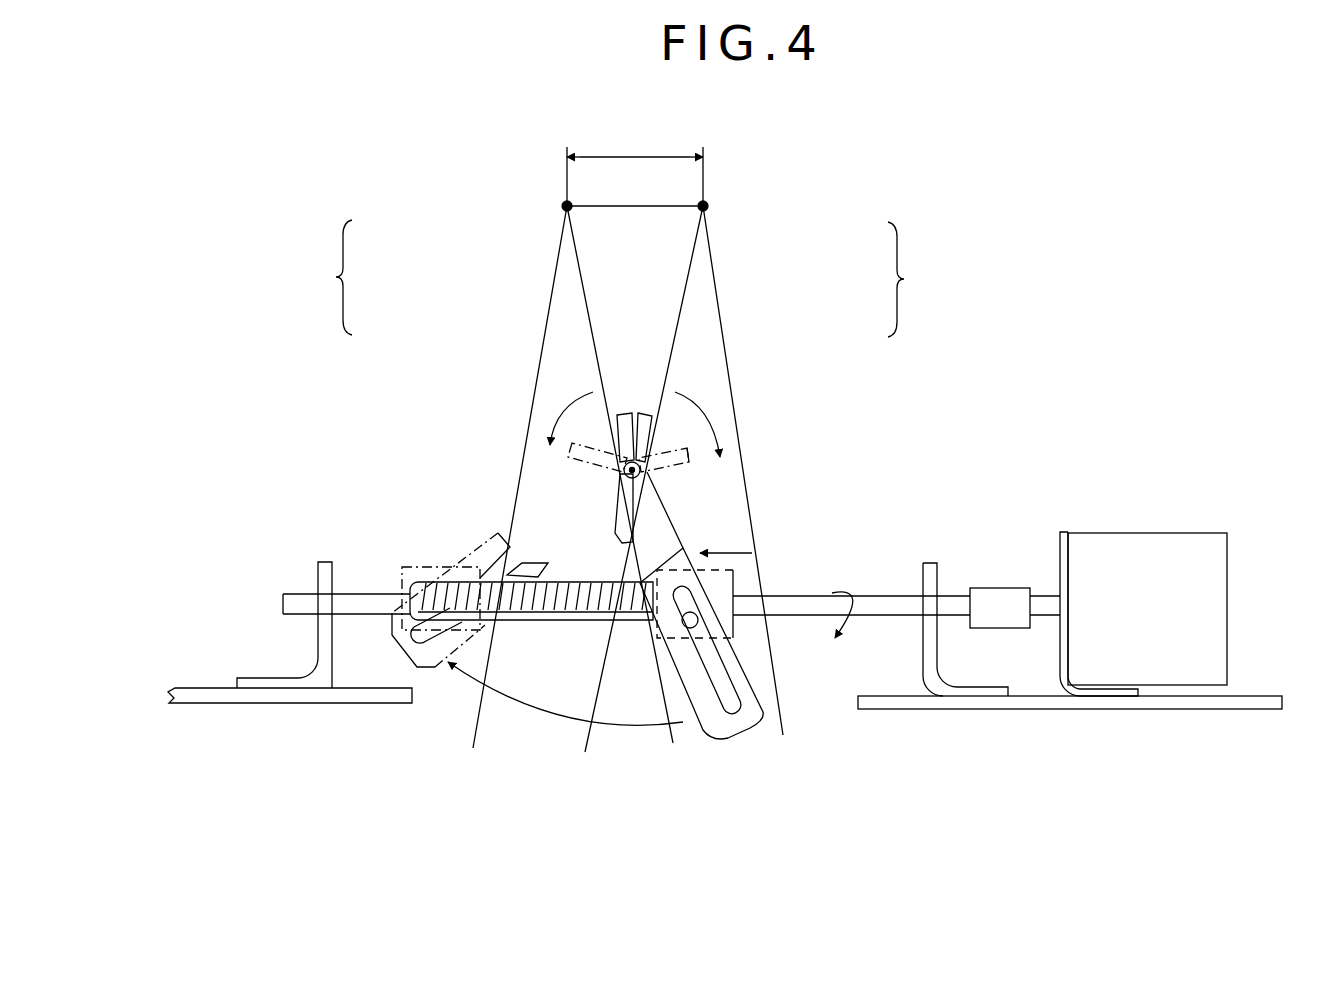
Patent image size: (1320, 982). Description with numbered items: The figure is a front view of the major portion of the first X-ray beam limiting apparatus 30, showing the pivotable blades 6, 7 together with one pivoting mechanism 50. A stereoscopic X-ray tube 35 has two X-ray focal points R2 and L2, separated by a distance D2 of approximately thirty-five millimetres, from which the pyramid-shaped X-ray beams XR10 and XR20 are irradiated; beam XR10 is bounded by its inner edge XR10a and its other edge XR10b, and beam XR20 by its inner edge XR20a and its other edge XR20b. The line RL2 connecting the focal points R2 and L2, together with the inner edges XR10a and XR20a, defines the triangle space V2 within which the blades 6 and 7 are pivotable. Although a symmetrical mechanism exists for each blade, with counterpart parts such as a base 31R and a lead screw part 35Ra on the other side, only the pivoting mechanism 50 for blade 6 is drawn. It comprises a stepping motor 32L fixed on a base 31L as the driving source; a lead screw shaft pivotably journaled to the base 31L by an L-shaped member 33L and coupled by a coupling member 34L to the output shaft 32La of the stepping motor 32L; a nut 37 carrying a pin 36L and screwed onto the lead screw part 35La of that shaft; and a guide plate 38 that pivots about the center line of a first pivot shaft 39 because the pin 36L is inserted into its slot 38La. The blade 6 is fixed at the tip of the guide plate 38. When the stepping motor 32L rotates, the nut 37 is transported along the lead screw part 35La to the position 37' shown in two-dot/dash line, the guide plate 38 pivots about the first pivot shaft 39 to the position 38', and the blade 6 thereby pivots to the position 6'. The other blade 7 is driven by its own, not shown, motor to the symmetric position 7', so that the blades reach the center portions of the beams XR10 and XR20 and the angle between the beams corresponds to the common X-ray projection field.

The distance between beam vertices D2 is at (635, 138).
The line connecting the two focal points RL2 is at (587, 203).
The X-ray focal point L2 is at (565, 204).
The triangle space V2 is at (575, 225).
The X-ray focal point R2 is at (707, 203).
The stereoscopic X-ray tube 35 is at (712, 211).
The pyramid X-ray beam XR20 is at (307, 277).
The left X-ray beam outer edge XR20b is at (555, 270).
The inner edge of pyramid X-ray beam XR20 XR20a is at (597, 293).
The inner edge of pyramid X-ray beam XR10 XR10a is at (710, 240).
The right X-ray beam outer edge XR10b is at (722, 322).
The pyramid X-ray beam XR10 is at (934, 279).
The pivotable blade 7 is at (623, 401).
The pivotable blade 6 is at (649, 389).
The pivoted position of blade 7 7' is at (532, 447).
The pivoted position of blade 6 6' is at (733, 447).
The first pivot shaft 39 is at (618, 472).
The transported position of nut 37' is at (440, 557).
The nut 37 is at (748, 555).
The pin 36L is at (700, 618).
The guide plate 38 is at (701, 641).
The pivoted position of guide plate 38' is at (448, 656).
The slot 38La is at (740, 727).
The lead screw part 35La is at (543, 620).
The right-hand threaded portion 35Ra is at (590, 628).
The right base plate 31R is at (262, 704).
The base 31L is at (1085, 710).
The output shaft 32La is at (1043, 618).
The coupling member 34L is at (1000, 598).
The L-shaped member 33L is at (1058, 548).
The stepping motor 32L is at (1225, 637).
The pivoting mechanism 50 is at (1020, 715).
The X-ray beam limiting apparatus 30 is at (970, 725).